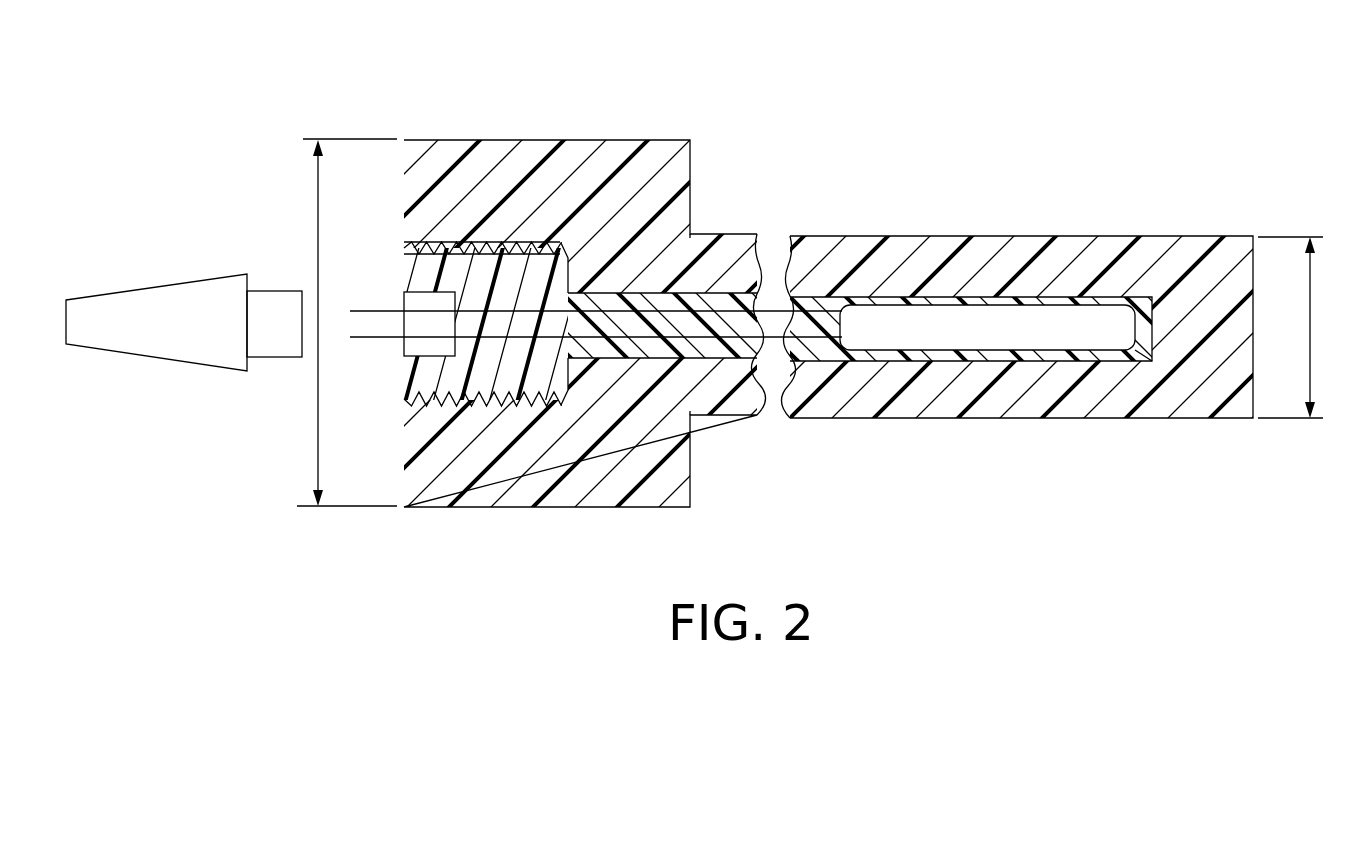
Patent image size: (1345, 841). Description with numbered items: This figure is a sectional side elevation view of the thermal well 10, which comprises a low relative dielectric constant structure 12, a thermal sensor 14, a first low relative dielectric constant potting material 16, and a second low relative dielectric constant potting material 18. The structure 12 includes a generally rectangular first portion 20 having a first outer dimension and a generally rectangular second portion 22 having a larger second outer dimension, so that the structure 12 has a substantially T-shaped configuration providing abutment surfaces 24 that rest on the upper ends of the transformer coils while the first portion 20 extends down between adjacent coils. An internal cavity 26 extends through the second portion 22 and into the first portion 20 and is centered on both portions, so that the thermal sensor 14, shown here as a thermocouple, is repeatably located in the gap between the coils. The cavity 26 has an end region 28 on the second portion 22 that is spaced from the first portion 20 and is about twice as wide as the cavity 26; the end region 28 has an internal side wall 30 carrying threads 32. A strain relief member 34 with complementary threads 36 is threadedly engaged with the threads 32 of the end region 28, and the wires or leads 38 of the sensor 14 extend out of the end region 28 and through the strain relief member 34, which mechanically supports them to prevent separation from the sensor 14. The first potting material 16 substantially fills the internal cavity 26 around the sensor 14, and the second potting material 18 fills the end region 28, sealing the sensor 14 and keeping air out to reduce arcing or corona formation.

The thermal well 10 is at (238, 80).
The low relative dielectric constant structure 12 is at (1093, 84).
The thermal sensor 14 is at (972, 313).
The first low relative dielectric constant potting material 16 is at (1132, 352).
The second low relative dielectric constant potting material 18 is at (472, 270).
The first portion 20 is at (1116, 226).
The second portion 22 is at (506, 520).
The abutment surface 24 is at (692, 195).
The internal cavity 26 is at (1050, 284).
The end region 28 is at (436, 272).
The internal side wall 30 is at (539, 226).
The threads 32 is at (426, 228).
The strain relief member 34 is at (143, 268).
The complementary threads 36 is at (275, 375).
The wires or leads 38 is at (383, 342).